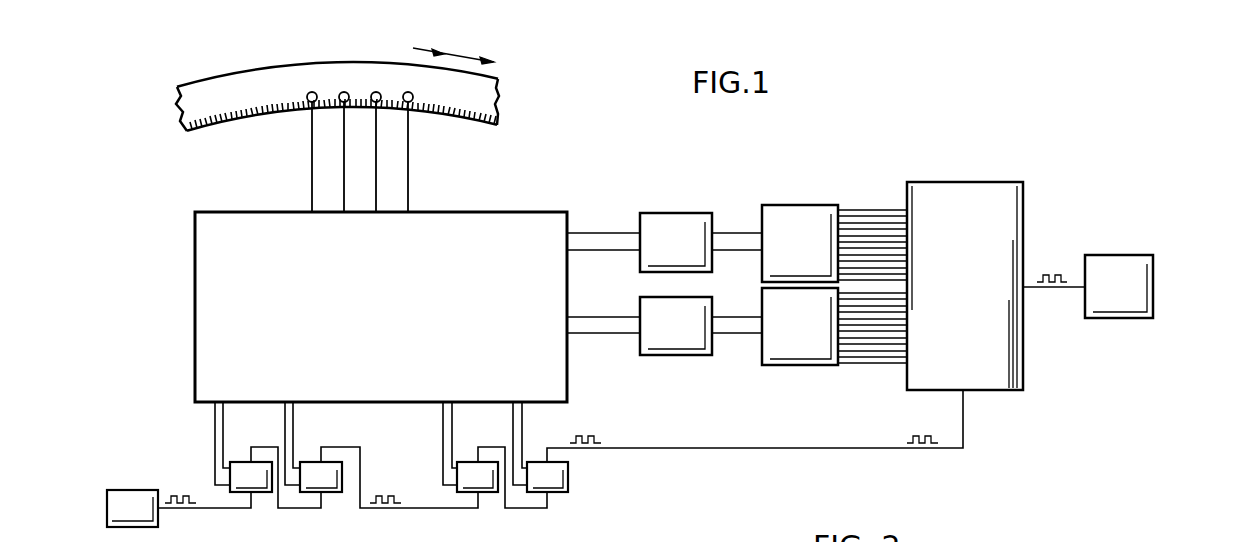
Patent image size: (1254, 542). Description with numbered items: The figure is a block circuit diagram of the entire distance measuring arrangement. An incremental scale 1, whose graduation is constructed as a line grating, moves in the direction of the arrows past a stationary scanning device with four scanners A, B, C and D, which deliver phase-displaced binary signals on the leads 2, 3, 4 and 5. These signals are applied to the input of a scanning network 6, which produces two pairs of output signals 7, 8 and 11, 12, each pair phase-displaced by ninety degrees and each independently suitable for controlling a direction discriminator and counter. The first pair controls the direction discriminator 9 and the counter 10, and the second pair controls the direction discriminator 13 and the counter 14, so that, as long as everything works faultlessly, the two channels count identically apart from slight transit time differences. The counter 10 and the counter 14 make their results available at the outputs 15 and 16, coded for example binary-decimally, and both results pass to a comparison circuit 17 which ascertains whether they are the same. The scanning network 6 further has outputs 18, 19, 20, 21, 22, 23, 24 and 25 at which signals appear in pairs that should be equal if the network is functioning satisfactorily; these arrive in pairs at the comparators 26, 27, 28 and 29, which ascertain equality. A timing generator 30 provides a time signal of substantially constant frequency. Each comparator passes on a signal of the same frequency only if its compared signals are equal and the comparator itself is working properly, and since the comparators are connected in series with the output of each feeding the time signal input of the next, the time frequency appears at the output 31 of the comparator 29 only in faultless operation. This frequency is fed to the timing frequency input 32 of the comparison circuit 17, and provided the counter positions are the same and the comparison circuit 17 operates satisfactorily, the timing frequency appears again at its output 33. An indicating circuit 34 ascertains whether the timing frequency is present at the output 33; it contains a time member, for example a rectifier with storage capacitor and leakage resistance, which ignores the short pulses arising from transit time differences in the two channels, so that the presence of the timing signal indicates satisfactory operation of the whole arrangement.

The incremental scale 1 is at (183, 113).
The lead 2 is at (312, 133).
The lead 3 is at (343, 167).
The lead 4 is at (378, 143).
The lead 5 is at (410, 183).
The scanning network 6 is at (228, 298).
The output signal 7 is at (610, 252).
The output signal 8 is at (590, 233).
The direction discriminator 9 is at (672, 222).
The counter 10 is at (793, 217).
The output signal 11 is at (613, 337).
The output signal 12 is at (590, 315).
The direction discriminator 13 is at (667, 345).
The counter 14 is at (800, 352).
The output 15 is at (868, 222).
The output 16 is at (880, 350).
The comparison circuit 17 is at (1002, 227).
The output 18 is at (213, 415).
The output 19 is at (227, 440).
The output 20 is at (287, 440).
The output 21 is at (295, 445).
The output 22 is at (442, 415).
The output 23 is at (457, 438).
The output 24 is at (512, 438).
The output 25 is at (522, 452).
The comparator 26 is at (250, 480).
The comparator 27 is at (323, 480).
The comparator 28 is at (478, 482).
The comparator 29 is at (553, 483).
The timing generator 30 is at (123, 502).
The output 31 is at (592, 448).
The timing frequency input 32 is at (967, 432).
The output 33 is at (1037, 293).
The indicating circuit 34 is at (1138, 268).